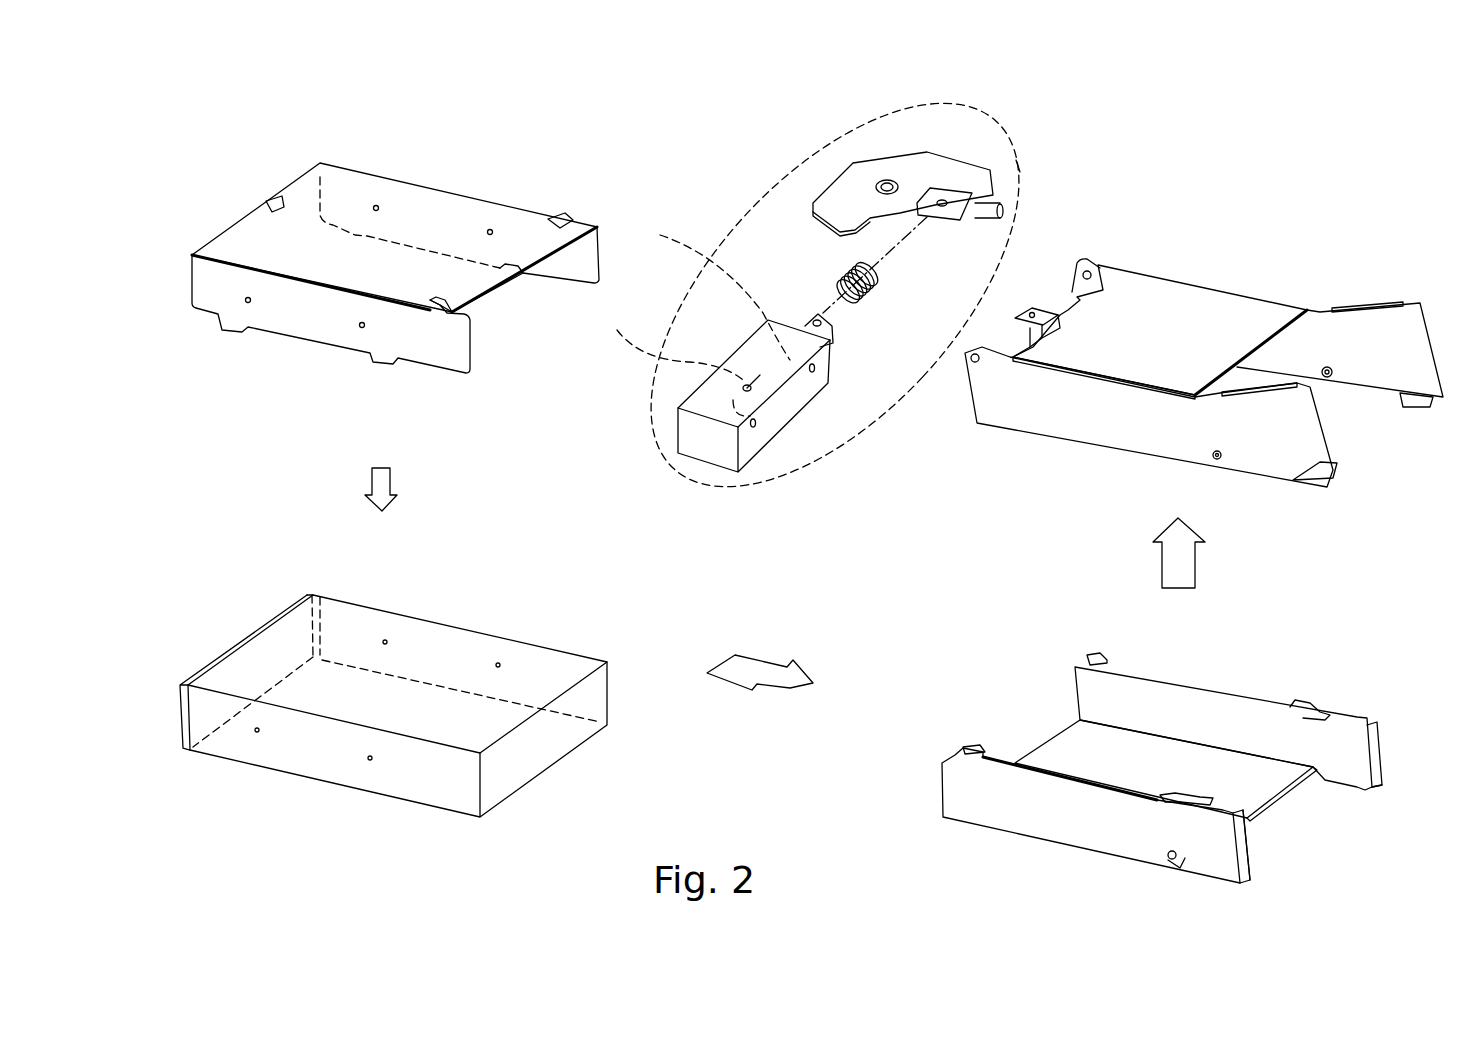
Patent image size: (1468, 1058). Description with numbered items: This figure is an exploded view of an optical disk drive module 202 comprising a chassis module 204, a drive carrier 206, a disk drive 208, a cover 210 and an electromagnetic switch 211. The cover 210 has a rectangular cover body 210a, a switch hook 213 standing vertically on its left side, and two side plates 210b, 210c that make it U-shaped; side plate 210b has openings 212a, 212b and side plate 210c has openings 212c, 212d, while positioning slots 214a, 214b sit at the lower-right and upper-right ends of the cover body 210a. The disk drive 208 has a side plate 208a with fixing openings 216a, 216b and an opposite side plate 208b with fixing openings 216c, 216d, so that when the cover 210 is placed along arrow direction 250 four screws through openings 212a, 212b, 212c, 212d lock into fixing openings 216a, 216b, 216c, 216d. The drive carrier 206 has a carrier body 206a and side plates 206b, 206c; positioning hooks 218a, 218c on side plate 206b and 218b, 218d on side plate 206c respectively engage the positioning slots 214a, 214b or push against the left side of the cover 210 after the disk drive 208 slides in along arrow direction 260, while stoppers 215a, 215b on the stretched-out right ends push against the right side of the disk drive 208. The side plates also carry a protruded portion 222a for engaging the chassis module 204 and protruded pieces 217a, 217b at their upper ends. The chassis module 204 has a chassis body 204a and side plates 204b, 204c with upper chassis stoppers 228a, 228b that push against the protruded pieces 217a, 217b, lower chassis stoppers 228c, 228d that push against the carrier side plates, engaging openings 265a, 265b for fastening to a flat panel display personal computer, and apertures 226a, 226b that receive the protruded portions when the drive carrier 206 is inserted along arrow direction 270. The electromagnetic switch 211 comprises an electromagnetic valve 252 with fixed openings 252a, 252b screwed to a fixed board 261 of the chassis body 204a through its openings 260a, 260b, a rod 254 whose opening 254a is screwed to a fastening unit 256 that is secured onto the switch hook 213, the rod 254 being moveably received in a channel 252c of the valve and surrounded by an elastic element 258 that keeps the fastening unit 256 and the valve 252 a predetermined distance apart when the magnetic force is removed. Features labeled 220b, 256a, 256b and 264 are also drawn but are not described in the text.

The optical disk drive module 202 is at (1313, 137).
The chassis module 204 is at (1198, 292).
The chassis body 204a is at (1135, 278).
The side plate 204b is at (1020, 418).
The side plate 204c is at (1318, 325).
The drive carrier 206 is at (1208, 687).
The carrier body 206a is at (1063, 752).
The side plate 206b is at (985, 815).
The side plate 206c is at (1135, 685).
The disk drive 208 is at (450, 626).
The side plate 208a is at (215, 747).
The side plate 208b is at (343, 617).
The cover 210 is at (440, 189).
The cover body 210a is at (259, 233).
The side plate 210b is at (203, 283).
The side plate 210c is at (578, 232).
The electromagnetic switch 211 is at (1023, 170).
The opening 212a is at (245, 303).
The opening 212b is at (358, 328).
The opening 212c is at (377, 204).
The opening 212d is at (491, 228).
The switch hook 213 is at (274, 203).
The positioning slot 214a is at (444, 315).
The positioning slot 214b is at (560, 213).
The stopper 215a is at (1250, 835).
The stopper 215b is at (1378, 790).
The fixing opening 216a is at (255, 735).
The fixing opening 216b is at (368, 763).
The fixing opening 216c is at (388, 638).
The fixing opening 216d is at (502, 662).
The protruded piece 217a is at (1228, 818).
The protruded piece 217b is at (1372, 718).
The positioning hook 218a is at (1175, 802).
The positioning hook 218b is at (1315, 703).
The positioning hook 218c is at (968, 748).
The positioning hook 218d is at (1095, 655).
The tray rail 220b is at (1310, 772).
The protruded portion 222a is at (1170, 862).
The aperture 226a is at (1212, 460).
The aperture 226b is at (1330, 378).
The chassis stopper 228a is at (1212, 455).
The chassis stopper 228b is at (1353, 305).
The chassis stopper 228c is at (1325, 483).
The chassis stopper 228d is at (1415, 402).
The arrow direction 250 is at (383, 482).
The electromagnetic valve 252 is at (705, 443).
The fixed opening 252a is at (758, 430).
The fixed opening 252b is at (818, 372).
The channel 252c is at (660, 340).
The rod 254 is at (702, 256).
The opening 254a is at (815, 318).
The fastening unit 256 is at (923, 158).
The latch lever hole 256a is at (887, 187).
The latch lever pin 256b is at (948, 200).
The elastic element 258 is at (848, 278).
The arrow direction 260 is at (748, 668).
The opening 260a is at (1040, 335).
The opening 260b is at (1057, 322).
The fixed board 261 is at (1045, 350).
The bracket tab 264 is at (1035, 310).
The engaging opening 265a is at (975, 365).
The engaging opening 265b is at (1090, 272).
The arrow direction 270 is at (1180, 570).